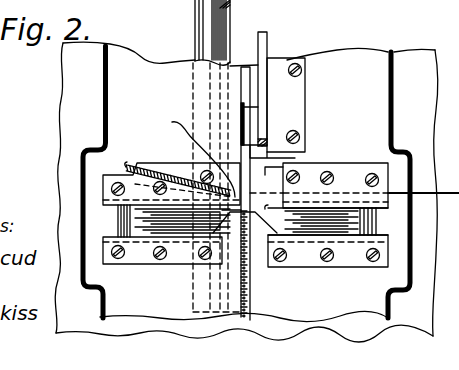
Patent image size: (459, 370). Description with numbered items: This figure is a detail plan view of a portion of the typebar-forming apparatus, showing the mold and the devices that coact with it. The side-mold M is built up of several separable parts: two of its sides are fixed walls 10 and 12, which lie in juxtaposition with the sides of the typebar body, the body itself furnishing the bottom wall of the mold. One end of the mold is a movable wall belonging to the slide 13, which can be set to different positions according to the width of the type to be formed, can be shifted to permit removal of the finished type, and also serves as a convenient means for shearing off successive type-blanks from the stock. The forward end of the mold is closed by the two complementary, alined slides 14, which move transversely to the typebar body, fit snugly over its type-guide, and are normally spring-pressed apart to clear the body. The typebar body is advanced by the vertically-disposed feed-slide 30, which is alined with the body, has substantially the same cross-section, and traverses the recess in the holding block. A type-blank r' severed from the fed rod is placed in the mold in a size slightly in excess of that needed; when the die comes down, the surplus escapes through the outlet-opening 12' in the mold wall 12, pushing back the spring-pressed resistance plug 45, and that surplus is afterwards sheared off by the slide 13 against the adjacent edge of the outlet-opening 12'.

The fixed mold wall 10 is at (315, 166).
The mold wall 12 is at (190, 205).
The outlet-opening 12' is at (199, 153).
The slide 13 is at (255, 153).
The slides 14 is at (253, 221).
The feed-slide 30 is at (248, 125).
The spring-pressed resistance device or plug 45 is at (147, 166).
The side-mold M is at (266, 188).
The type-blank r' is at (253, 264).